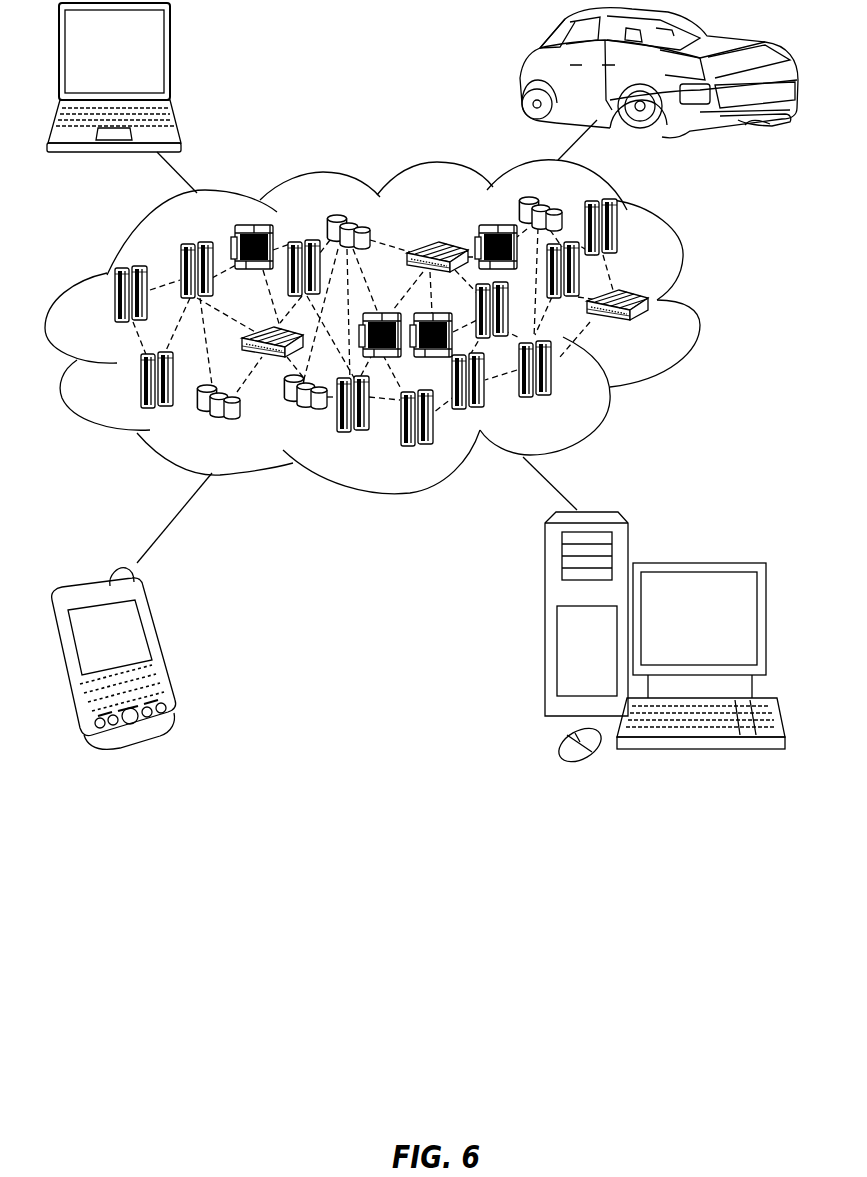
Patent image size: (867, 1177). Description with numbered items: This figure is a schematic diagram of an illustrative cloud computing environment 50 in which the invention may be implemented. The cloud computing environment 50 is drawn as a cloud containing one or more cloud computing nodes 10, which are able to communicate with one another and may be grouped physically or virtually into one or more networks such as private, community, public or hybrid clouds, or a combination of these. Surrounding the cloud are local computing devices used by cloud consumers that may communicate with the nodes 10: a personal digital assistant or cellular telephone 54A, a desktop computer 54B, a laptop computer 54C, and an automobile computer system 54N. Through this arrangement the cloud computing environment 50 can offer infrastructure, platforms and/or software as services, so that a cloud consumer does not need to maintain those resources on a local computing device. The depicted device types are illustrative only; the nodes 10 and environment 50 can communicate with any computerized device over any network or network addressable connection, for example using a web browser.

The cloud computing nodes 10 is at (655, 338).
The cloud computing environment 50 is at (698, 300).
The personal digital assistant or cellular telephone 54A is at (160, 647).
The desktop computer 54B is at (698, 563).
The laptop computer 54C is at (170, 58).
The automobile computer system 54N is at (518, 70).